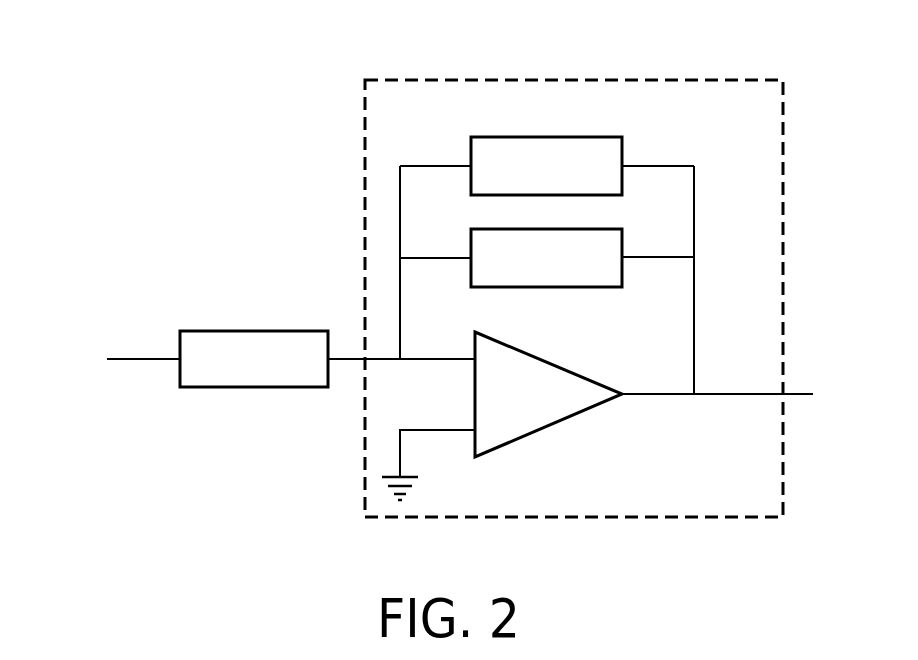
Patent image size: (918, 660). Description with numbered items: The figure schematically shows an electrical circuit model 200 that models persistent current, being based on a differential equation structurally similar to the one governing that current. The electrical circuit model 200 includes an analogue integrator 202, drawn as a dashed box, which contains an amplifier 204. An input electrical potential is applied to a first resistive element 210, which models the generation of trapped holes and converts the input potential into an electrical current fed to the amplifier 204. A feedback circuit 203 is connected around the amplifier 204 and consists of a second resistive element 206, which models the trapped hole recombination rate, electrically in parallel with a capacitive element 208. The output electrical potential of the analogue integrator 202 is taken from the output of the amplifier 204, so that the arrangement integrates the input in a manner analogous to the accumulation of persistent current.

The electrical circuit model 200 is at (142, 135).
The analogue integrator 202 is at (743, 86).
The feedback circuit 203 is at (674, 279).
The amplifier 204 is at (570, 402).
The second resistive element 206 is at (610, 152).
The capacitive element 208 is at (594, 287).
The first resistive element 210 is at (204, 340).